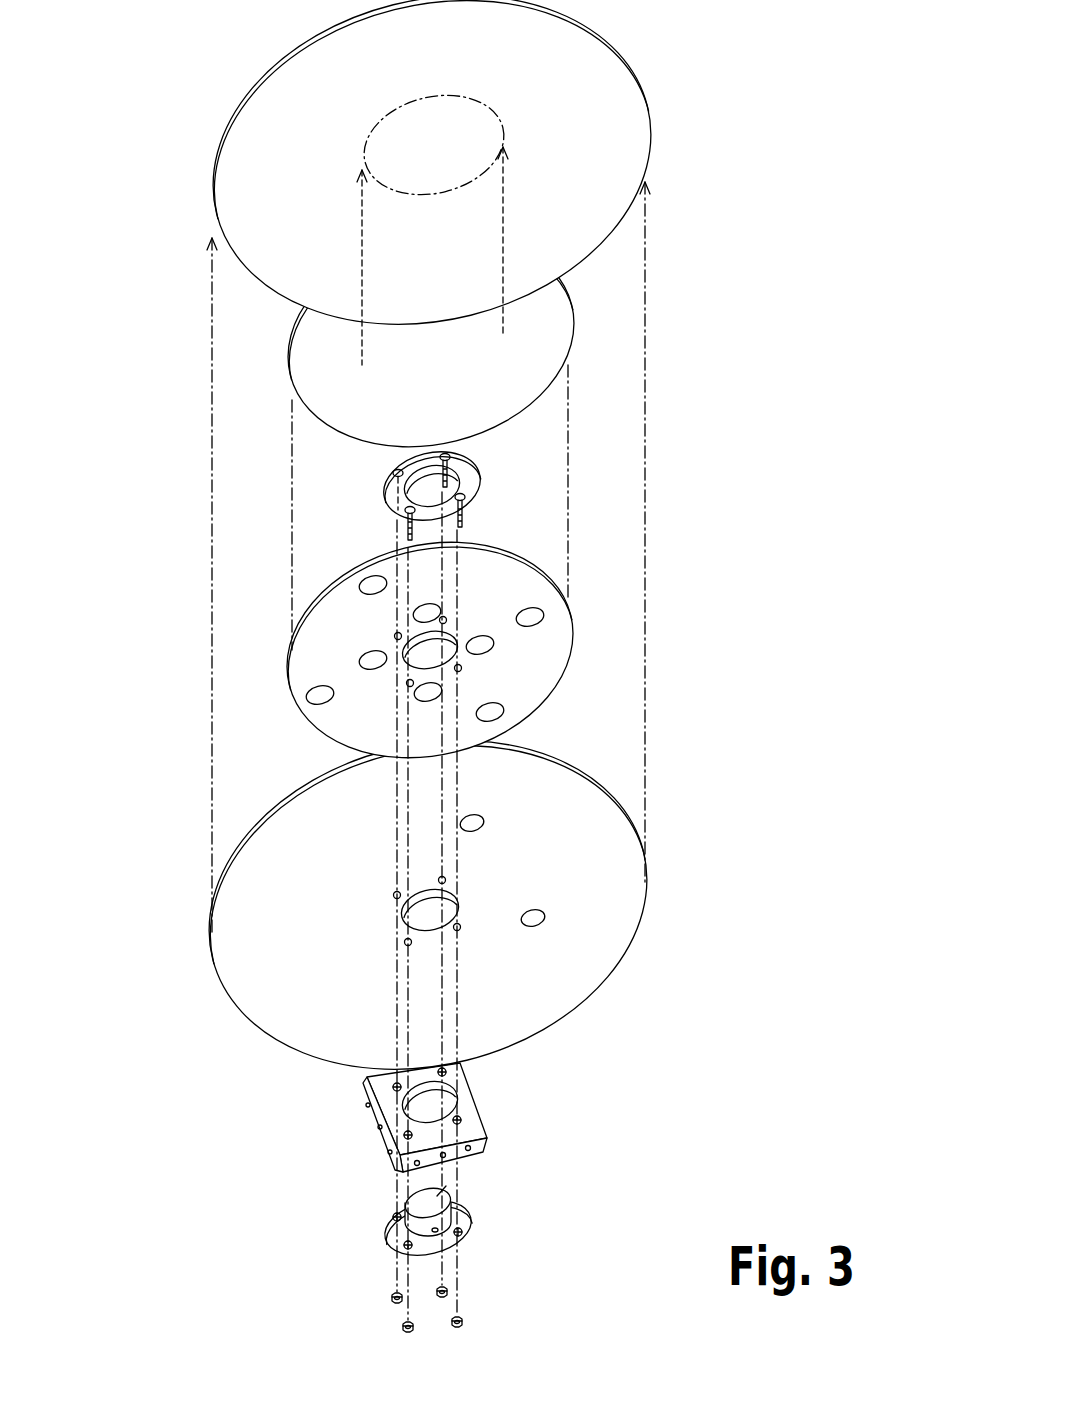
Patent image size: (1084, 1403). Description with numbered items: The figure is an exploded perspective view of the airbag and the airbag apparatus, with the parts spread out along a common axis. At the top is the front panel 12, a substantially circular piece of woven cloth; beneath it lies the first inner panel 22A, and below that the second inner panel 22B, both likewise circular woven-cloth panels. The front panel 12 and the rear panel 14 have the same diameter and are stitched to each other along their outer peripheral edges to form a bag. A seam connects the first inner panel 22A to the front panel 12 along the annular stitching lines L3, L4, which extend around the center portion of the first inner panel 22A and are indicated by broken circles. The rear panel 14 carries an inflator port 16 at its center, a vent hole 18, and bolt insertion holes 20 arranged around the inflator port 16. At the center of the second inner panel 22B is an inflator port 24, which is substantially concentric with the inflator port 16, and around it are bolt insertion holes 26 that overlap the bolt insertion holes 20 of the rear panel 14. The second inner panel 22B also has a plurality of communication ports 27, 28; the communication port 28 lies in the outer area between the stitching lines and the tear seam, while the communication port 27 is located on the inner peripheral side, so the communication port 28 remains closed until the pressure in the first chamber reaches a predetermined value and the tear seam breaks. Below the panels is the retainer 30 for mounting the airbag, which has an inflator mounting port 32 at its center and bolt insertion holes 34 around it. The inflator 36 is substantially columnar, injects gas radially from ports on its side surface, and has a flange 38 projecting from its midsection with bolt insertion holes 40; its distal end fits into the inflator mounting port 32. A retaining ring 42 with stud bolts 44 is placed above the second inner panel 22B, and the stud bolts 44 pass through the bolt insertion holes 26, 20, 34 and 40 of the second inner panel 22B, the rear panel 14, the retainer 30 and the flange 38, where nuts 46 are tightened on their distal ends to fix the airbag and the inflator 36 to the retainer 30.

The front panel 12 is at (594, 43).
The rear panel 14 is at (278, 1016).
The inflator port 16 is at (417, 912).
The vent hole 18 is at (481, 816).
The bolt insertion holes 20 is at (446, 880).
The first inner panel 22A is at (554, 325).
The second inner panel 22B is at (554, 625).
The inflator port 24 is at (410, 659).
The bolt insertion holes 26 is at (447, 617).
The communication port 27 is at (432, 604).
The communication port 28 is at (366, 576).
The retainer 30 is at (486, 1108).
The inflator mounting port 32 is at (434, 1100).
The bolt insertion holes 34 is at (393, 1088).
The inflator 36 is at (442, 1203).
The flange 38 is at (475, 1226).
The bolt insertion holes 40 is at (392, 1217).
The retaining ring 42 is at (463, 479).
The stud bolts 44 is at (461, 522).
The nuts 46 is at (402, 1326).
The annular stitching line L3 is at (364, 366).
The annular stitching line L4 is at (496, 107).